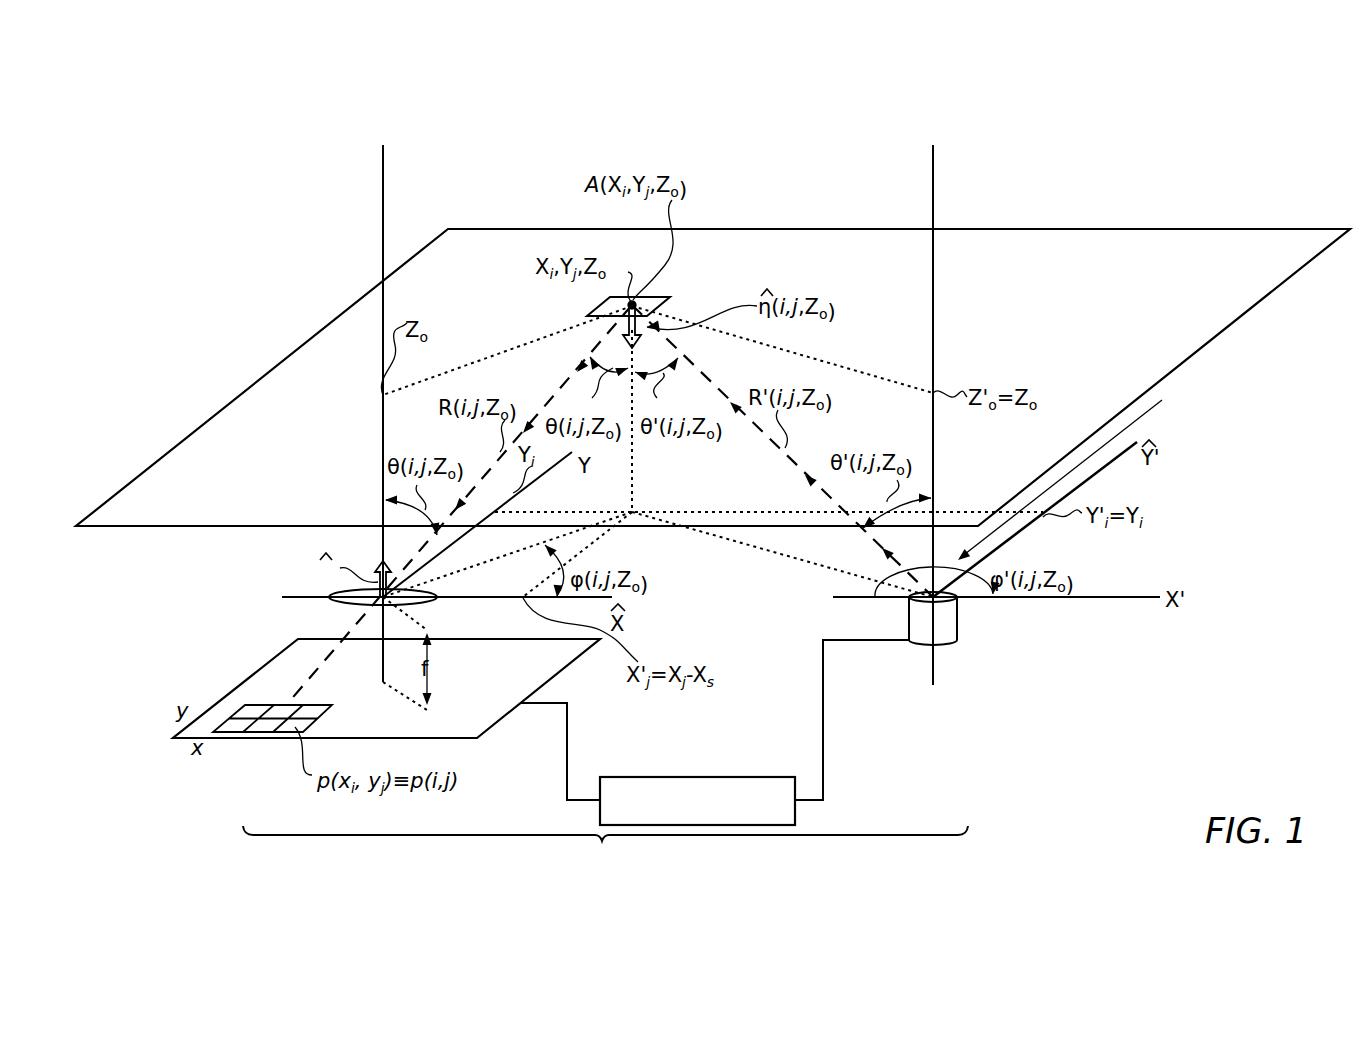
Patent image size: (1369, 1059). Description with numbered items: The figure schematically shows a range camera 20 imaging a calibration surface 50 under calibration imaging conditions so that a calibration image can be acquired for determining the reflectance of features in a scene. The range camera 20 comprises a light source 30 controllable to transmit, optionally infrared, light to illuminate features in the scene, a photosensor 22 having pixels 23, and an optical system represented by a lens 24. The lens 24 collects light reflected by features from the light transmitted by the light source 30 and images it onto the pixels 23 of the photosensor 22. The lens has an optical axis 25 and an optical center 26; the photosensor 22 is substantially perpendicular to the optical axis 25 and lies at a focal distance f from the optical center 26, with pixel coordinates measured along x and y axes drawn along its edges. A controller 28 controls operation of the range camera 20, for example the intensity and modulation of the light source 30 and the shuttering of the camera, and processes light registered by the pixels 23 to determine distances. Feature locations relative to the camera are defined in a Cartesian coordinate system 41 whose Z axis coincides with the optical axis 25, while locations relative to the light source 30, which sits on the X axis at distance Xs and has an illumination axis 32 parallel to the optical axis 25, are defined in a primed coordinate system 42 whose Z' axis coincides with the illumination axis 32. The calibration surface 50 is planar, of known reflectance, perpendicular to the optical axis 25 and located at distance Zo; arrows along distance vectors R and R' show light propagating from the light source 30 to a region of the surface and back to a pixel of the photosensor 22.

The range camera 20 is at (605, 851).
The photosensor 22 is at (386, 688).
The pixels 23 is at (235, 718).
The lens 24 is at (345, 595).
The optical axis 25 is at (383, 233).
The optical center 26 is at (365, 604).
The controller 28 is at (695, 777).
The light source 30 is at (958, 632).
The illumination axis 32 is at (933, 280).
The Cartesian coordinate system 41 is at (360, 540).
The primed coordinate system 42 is at (1074, 478).
The calibration surface 50 is at (713, 377).